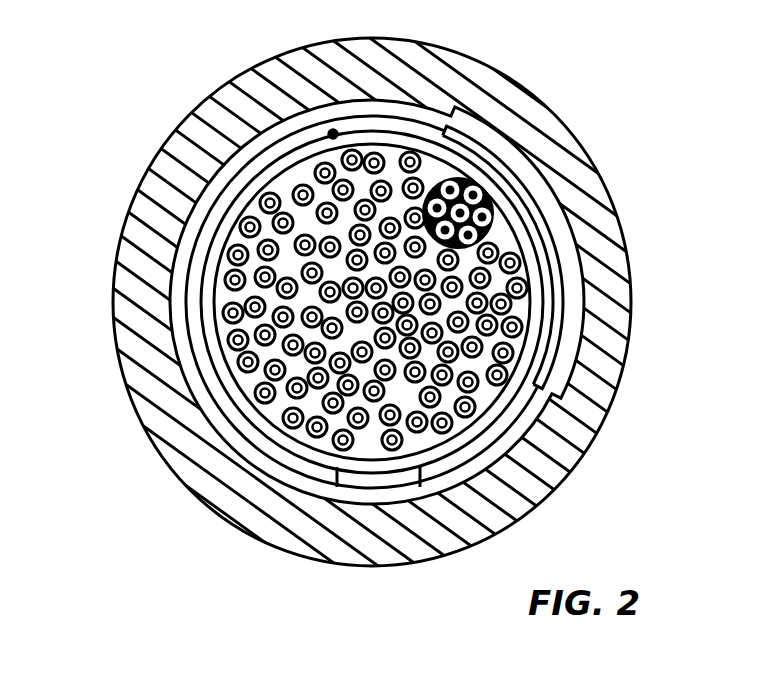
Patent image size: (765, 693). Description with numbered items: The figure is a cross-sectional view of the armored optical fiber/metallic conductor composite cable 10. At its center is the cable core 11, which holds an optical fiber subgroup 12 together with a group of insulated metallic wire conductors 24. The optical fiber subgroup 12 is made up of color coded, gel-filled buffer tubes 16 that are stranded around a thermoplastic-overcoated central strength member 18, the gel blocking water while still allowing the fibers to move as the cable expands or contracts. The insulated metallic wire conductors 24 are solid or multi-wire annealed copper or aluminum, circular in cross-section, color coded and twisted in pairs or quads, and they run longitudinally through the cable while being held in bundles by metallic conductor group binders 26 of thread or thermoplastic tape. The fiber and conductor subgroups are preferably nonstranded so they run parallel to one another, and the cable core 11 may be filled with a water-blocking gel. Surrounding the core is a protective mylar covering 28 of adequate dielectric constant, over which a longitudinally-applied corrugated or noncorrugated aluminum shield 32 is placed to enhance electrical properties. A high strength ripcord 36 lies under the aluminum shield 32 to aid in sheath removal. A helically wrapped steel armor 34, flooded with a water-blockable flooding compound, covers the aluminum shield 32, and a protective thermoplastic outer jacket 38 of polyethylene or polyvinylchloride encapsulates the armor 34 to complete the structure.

The optical fiber/metallic conductor composite cable 10 is at (130, 444).
The cable core 11 is at (528, 287).
The optical fiber subgroup 12 is at (558, 185).
The gel-filled buffer tubes 16 is at (495, 206).
The central strength member 18 is at (482, 182).
The insulated metallic wire conductors 24 is at (512, 353).
The metallic conductor group binders 26 is at (575, 415).
The protective mylar covering 28 is at (312, 456).
The aluminum shield 32 is at (253, 432).
The steel armor 34 is at (380, 498).
The ripcord 36 is at (333, 133).
The protective thermoplastic outer jacket 38 is at (508, 96).